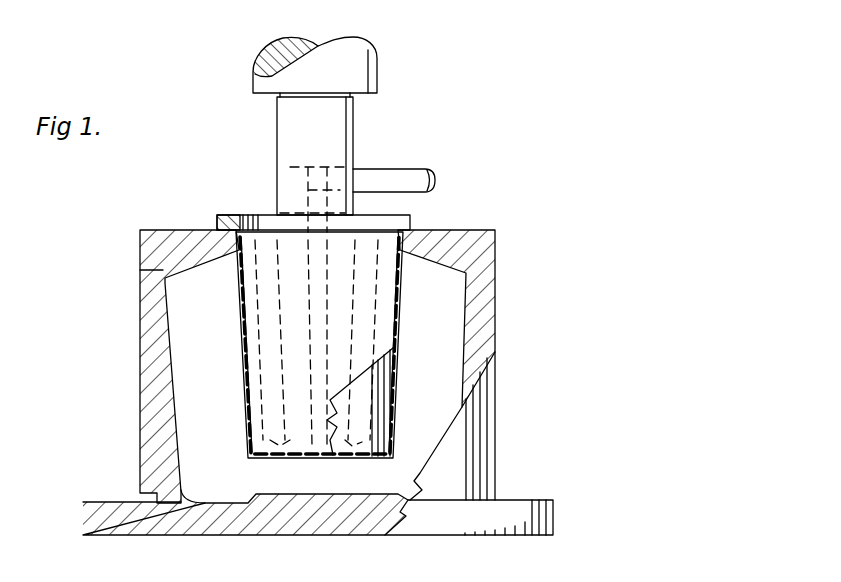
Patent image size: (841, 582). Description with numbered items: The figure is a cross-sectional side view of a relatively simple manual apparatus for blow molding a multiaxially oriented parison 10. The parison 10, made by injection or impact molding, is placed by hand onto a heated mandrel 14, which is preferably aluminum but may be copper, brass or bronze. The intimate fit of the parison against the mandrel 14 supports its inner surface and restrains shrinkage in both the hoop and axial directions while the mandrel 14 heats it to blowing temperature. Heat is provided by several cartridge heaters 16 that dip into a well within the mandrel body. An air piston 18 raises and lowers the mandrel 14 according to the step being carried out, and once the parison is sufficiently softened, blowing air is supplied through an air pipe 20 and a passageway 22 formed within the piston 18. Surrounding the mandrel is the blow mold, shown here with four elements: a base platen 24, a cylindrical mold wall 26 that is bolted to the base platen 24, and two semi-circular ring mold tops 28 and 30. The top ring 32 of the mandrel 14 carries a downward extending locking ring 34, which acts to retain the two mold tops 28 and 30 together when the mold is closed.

The parison 10 is at (393, 348).
The mandrel 14 is at (398, 276).
The cartridge heaters 16 is at (262, 370).
The air piston 18 is at (405, 64).
The air pipe 20 is at (412, 173).
The passageway 22 is at (292, 172).
The base platen 24 is at (125, 527).
The mold wall 26 is at (142, 388).
The mold top 28 is at (140, 250).
The mold top 30 is at (497, 258).
The top ring 32 is at (262, 215).
The locking ring 34 is at (222, 220).